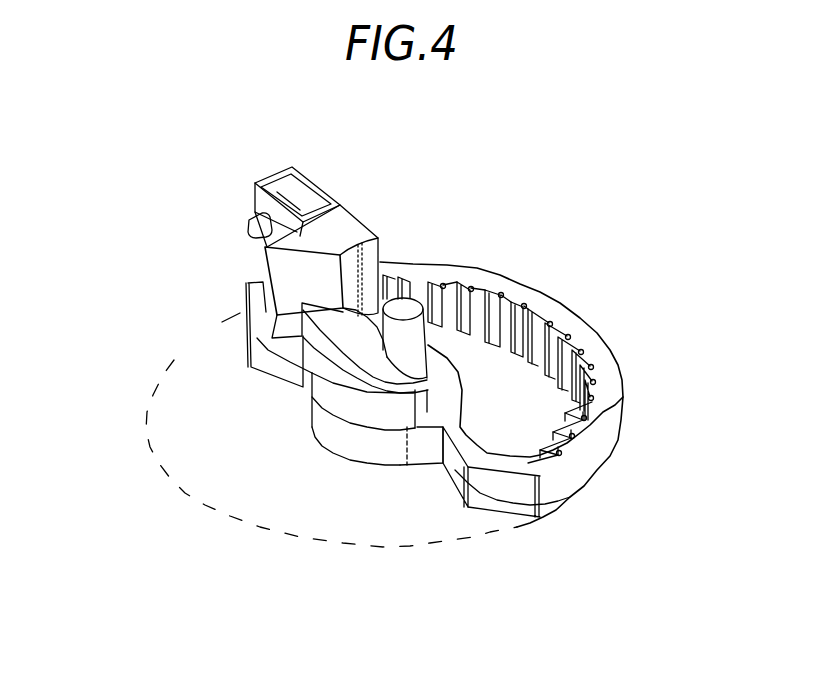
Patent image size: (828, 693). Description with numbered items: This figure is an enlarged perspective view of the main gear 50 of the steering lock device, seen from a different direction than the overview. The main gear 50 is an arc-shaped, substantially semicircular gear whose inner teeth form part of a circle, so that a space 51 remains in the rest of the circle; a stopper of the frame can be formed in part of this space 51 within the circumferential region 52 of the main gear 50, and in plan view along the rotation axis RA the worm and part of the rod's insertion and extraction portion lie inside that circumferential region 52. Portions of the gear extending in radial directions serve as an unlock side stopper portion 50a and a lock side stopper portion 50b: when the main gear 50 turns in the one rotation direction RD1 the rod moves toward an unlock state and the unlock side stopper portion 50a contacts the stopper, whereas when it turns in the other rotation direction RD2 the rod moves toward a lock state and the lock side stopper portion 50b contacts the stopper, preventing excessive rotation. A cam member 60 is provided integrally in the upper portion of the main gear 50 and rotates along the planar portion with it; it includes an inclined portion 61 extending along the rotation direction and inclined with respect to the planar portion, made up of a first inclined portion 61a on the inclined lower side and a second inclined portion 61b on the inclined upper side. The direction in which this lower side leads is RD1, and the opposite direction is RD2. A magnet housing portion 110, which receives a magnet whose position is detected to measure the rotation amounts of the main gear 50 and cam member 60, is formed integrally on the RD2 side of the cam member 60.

The main gear 50 is at (376, 370).
The unlock side stopper portion 50a is at (257, 338).
The lock side stopper portion 50b is at (560, 497).
The space 51 is at (373, 521).
The circumferential region 52 is at (405, 548).
The rotation axis RA is at (480, 268).
The one rotation direction RD1 is at (560, 548).
The other rotation direction RD2 is at (283, 578).
The cam member 60 is at (249, 315).
The inclined portion 61 is at (249, 362).
The first inclined portion 61a is at (345, 342).
The second inclined portion 61b is at (297, 275).
The magnet housing portion 110 is at (299, 172).